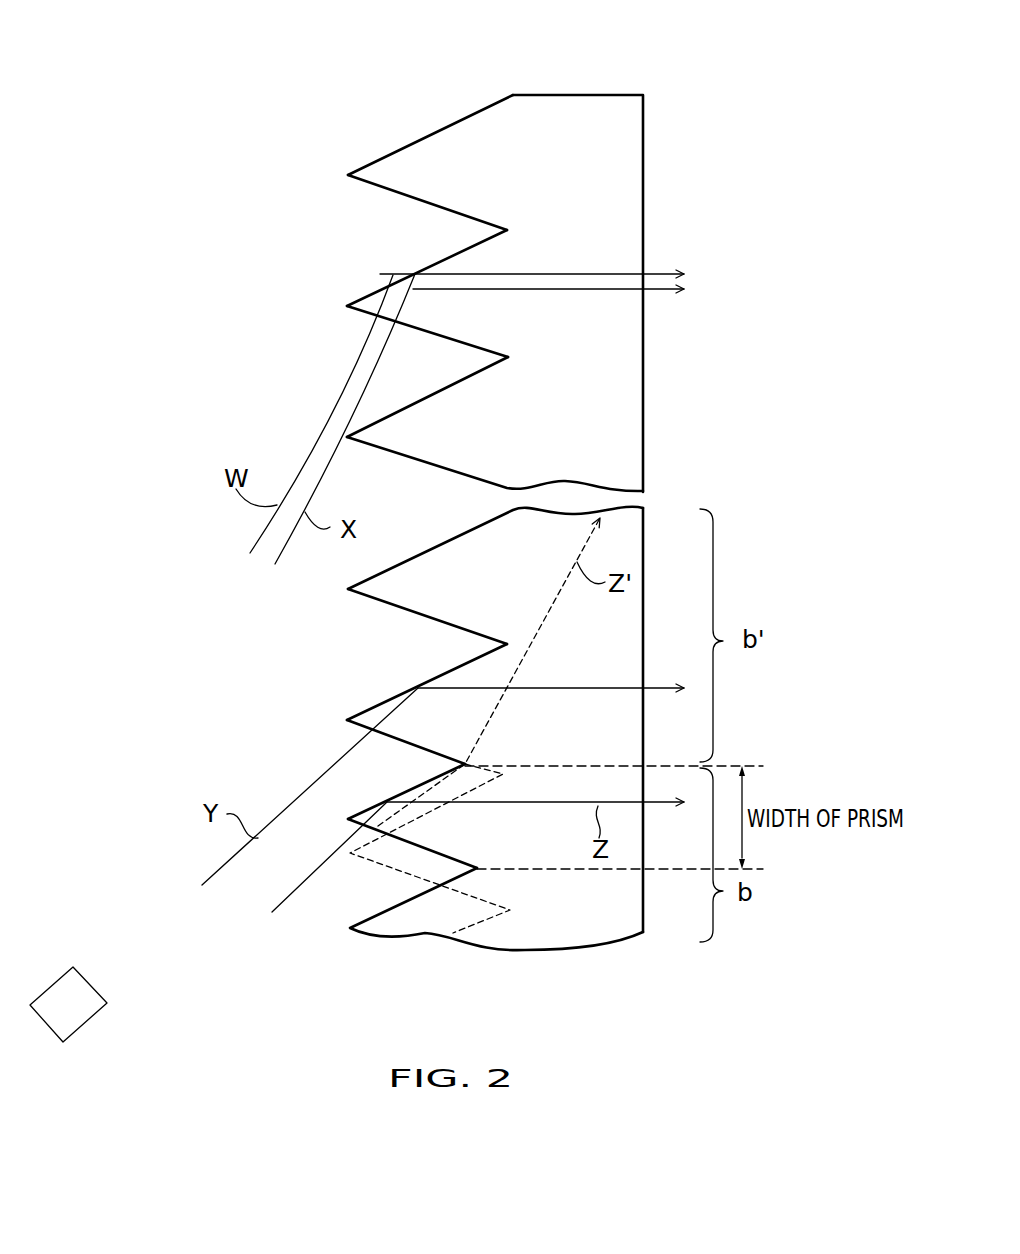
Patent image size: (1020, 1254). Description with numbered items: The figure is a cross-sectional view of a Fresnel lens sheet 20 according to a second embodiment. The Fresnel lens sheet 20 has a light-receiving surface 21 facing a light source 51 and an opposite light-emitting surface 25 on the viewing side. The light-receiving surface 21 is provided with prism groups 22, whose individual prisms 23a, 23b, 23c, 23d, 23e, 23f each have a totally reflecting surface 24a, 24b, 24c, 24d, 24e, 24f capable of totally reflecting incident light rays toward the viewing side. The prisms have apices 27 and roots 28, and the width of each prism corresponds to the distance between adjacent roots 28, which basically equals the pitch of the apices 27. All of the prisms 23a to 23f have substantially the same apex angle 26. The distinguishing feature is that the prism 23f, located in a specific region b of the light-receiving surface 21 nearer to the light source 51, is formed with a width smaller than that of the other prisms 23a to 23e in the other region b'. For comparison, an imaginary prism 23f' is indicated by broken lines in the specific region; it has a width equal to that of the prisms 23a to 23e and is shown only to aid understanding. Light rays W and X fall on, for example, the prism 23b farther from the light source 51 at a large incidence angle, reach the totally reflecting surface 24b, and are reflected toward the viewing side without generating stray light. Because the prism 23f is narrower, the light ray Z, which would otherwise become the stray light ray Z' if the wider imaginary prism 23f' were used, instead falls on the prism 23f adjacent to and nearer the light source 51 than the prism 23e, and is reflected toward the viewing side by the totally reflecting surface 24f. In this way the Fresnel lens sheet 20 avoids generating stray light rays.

The Fresnel lens sheet 20 is at (336, 93).
The light-receiving surface 21 is at (205, 207).
The prism groups 22 is at (262, 160).
The prism 23a is at (466, 118).
The prism 23b is at (493, 237).
The prism 23c is at (480, 370).
The prism 23d is at (462, 538).
The prism 23e is at (489, 655).
The prism 23f is at (462, 807).
The imaginary prism 23f' is at (435, 848).
The totally reflecting surface 24a is at (443, 130).
The totally reflecting surface 24b is at (457, 254).
The totally reflecting surface 24c is at (441, 393).
The totally reflecting surface 24d is at (434, 550).
The totally reflecting surface 24e is at (456, 670).
The totally reflecting surface 24f is at (410, 792).
The light-emitting surface 25 is at (672, 186).
The apex angle 26 is at (388, 182).
The apices 27 is at (348, 176).
The roots 28 is at (442, 768).
The light source 51 is at (84, 1008).